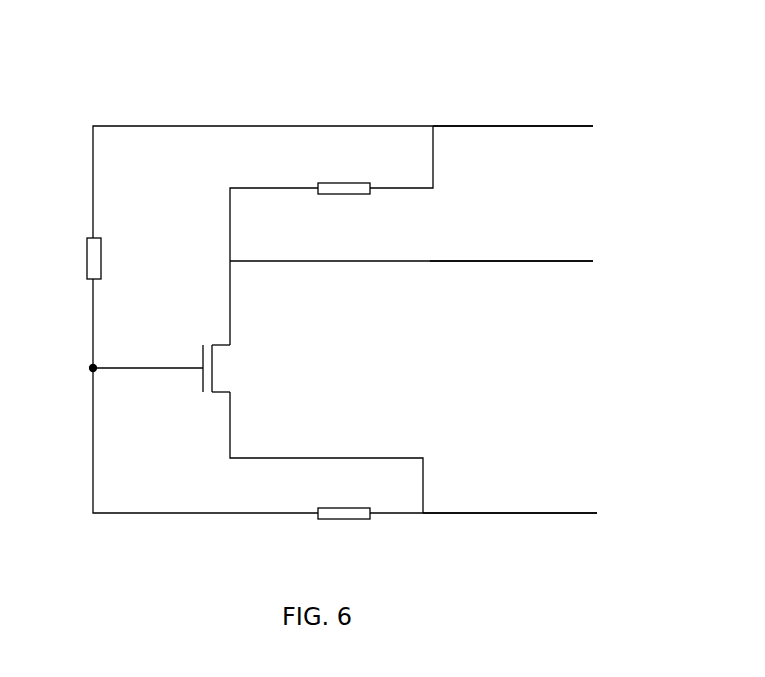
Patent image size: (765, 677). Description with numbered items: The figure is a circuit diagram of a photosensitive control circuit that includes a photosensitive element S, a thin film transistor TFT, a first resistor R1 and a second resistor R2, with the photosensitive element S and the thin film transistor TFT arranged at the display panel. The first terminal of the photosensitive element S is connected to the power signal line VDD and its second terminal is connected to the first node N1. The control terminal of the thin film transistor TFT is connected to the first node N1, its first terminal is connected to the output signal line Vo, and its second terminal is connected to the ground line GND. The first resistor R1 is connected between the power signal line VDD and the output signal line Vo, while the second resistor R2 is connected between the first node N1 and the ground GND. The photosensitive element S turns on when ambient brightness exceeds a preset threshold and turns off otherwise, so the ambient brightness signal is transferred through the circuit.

The photosensitive element S is at (88, 258).
The first resistor R1 is at (344, 173).
The second resistor R2 is at (344, 536).
The thin film transistor TFT is at (235, 368).
The first node N1 is at (147, 356).
The power signal line VDD is at (513, 107).
The output signal line Vo is at (511, 248).
The ground line GND is at (510, 495).